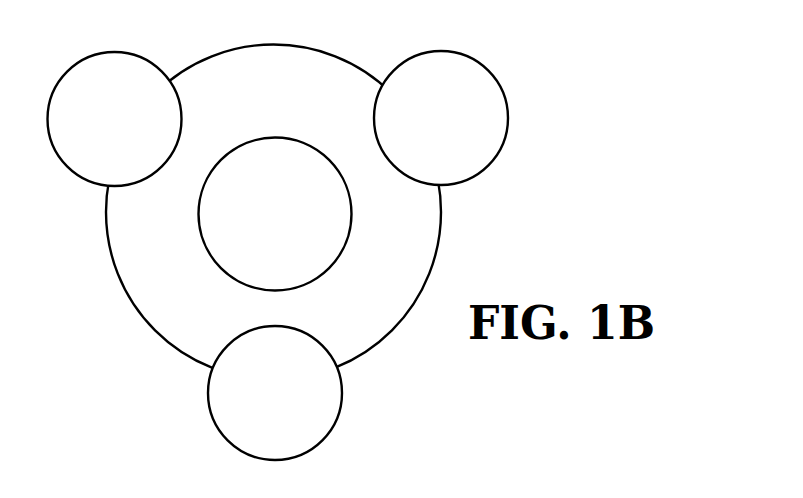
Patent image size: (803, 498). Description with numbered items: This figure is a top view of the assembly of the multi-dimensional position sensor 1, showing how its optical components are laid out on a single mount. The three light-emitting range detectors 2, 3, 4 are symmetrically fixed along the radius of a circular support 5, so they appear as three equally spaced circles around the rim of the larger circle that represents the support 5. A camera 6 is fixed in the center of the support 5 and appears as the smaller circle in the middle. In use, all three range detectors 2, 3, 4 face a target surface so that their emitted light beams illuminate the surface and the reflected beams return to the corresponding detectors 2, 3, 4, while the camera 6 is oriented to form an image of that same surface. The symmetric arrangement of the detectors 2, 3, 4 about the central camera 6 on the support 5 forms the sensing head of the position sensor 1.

The multi-dimensional position sensor 1 is at (278, 233).
The light-emitting range detector 2 is at (126, 131).
The light-emitting range detector 3 is at (295, 414).
The light-emitting range detector 4 is at (441, 118).
The circular support 5 is at (188, 276).
The camera 6 is at (263, 227).